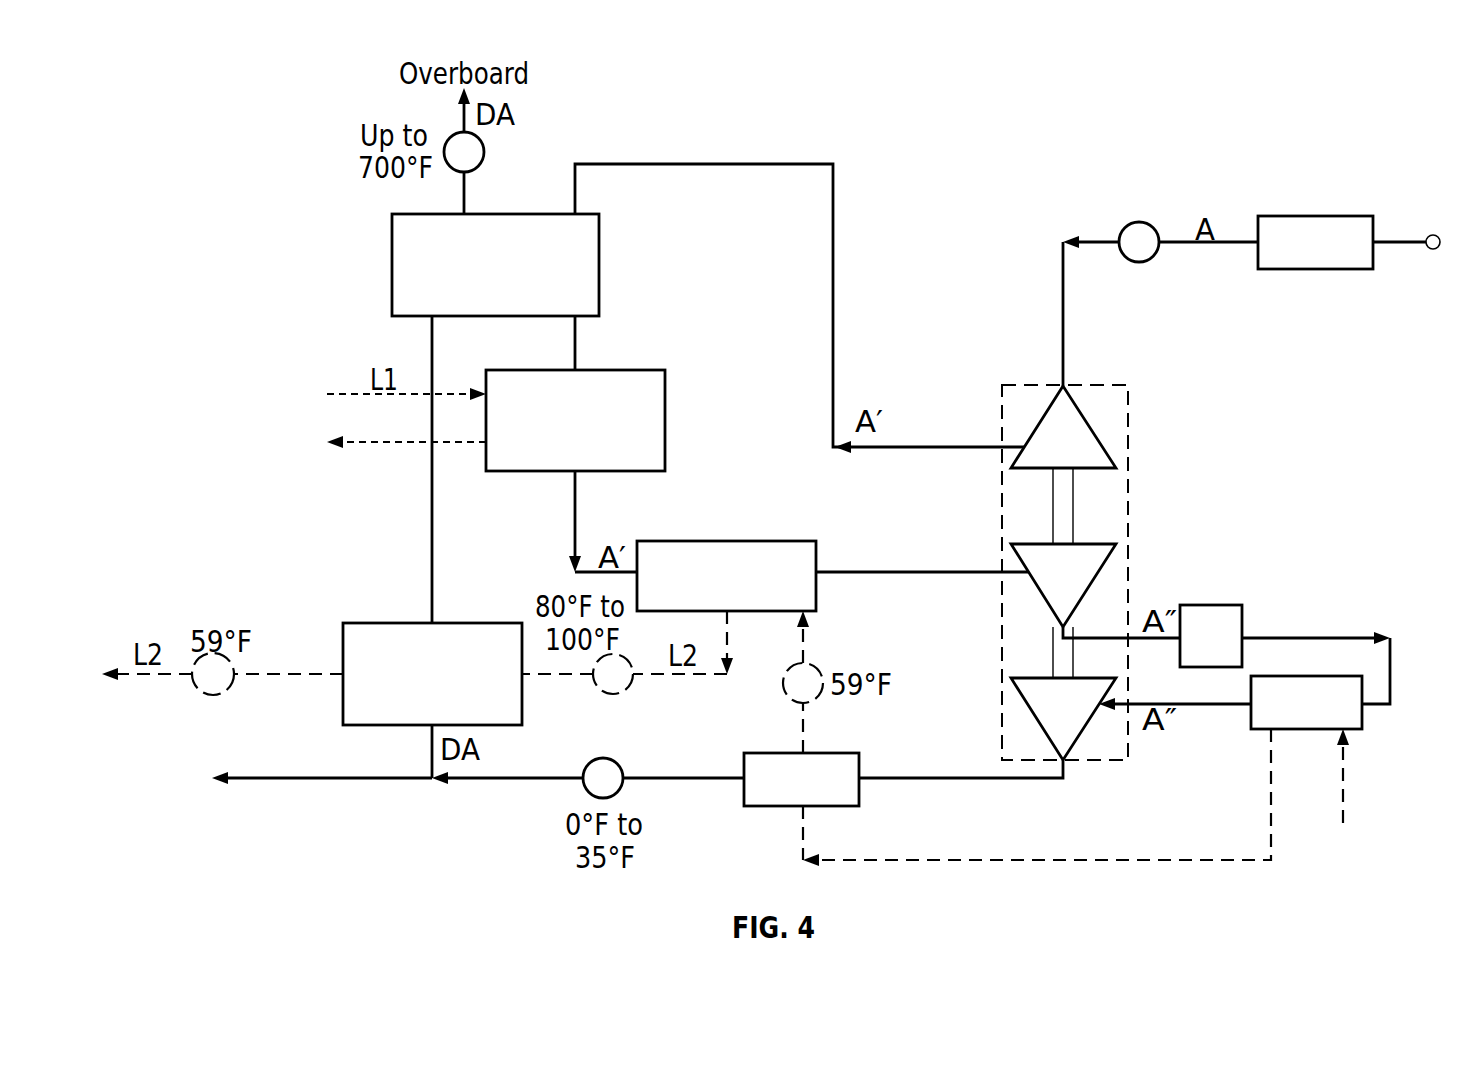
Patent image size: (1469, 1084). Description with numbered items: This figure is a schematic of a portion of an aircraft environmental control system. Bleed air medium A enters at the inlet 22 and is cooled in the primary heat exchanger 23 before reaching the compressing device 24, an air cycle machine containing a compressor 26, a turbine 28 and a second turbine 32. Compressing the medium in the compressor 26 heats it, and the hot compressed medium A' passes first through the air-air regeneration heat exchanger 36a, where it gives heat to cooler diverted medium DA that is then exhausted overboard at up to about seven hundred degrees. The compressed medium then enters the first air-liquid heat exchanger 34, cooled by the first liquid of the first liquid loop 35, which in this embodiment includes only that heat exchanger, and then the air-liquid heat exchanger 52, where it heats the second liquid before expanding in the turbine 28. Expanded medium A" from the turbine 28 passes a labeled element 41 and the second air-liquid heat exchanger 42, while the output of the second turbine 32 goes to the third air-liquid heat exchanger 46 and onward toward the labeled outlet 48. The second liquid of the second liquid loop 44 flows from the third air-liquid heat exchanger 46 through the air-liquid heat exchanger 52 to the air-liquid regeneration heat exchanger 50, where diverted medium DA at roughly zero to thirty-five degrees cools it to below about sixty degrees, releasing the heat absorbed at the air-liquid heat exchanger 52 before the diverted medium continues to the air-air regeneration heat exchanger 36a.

The inlet 22 is at (1437, 234).
The primary heat exchanger 23 is at (1326, 216).
The compressing device 24 is at (1066, 550).
The compressor 26 is at (1083, 441).
The turbine 28 is at (1030, 556).
The second turbine 32 is at (1032, 689).
The first air-liquid heat exchanger 34 is at (665, 382).
The first liquid loop 35 is at (347, 456).
The air-air regeneration heat exchanger 36a is at (599, 226).
The water collector 41 is at (1213, 605).
The second air-liquid heat exchanger 42 is at (1320, 676).
The second liquid loop 44 is at (1241, 852).
The third air-liquid heat exchanger 46 is at (763, 753).
The conditioned air outlet A″ 48 is at (262, 781).
The air-liquid regeneration heat exchanger 50 is at (343, 634).
The air-liquid heat exchanger 52 is at (816, 554).